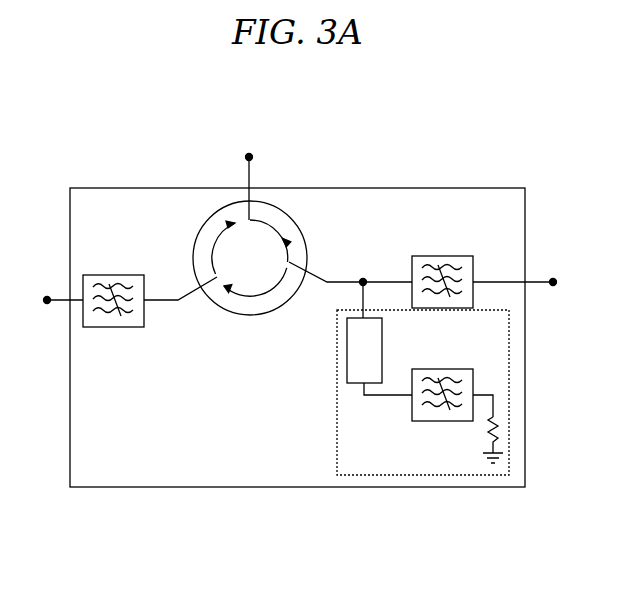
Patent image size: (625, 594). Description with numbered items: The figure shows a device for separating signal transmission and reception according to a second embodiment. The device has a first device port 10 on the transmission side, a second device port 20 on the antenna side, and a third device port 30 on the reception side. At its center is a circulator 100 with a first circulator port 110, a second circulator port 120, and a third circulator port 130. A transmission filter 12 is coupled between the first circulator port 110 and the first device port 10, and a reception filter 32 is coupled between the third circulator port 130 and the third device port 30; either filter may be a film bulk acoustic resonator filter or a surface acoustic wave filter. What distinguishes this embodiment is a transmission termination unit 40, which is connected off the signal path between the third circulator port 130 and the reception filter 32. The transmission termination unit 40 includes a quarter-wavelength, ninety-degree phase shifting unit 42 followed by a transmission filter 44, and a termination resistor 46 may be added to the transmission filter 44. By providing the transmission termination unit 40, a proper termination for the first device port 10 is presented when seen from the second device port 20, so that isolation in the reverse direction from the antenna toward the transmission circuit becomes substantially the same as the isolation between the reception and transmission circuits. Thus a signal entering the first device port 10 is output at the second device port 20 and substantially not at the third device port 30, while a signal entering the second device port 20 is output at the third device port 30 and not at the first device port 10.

The first device port 10 is at (47, 297).
The transmission filter 12 is at (121, 275).
The second device port 20 is at (252, 157).
The third device port 30 is at (553, 280).
The reception filter 32 is at (443, 256).
The transmission termination unit 40 is at (431, 411).
The phase shifting unit 42 is at (347, 352).
The transmission filter 44 is at (443, 369).
The termination resistor 46 is at (497, 419).
The circulator 100 is at (293, 243).
The first circulator port 110 is at (205, 277).
The second circulator port 120 is at (234, 230).
The third circulator port 130 is at (318, 273).